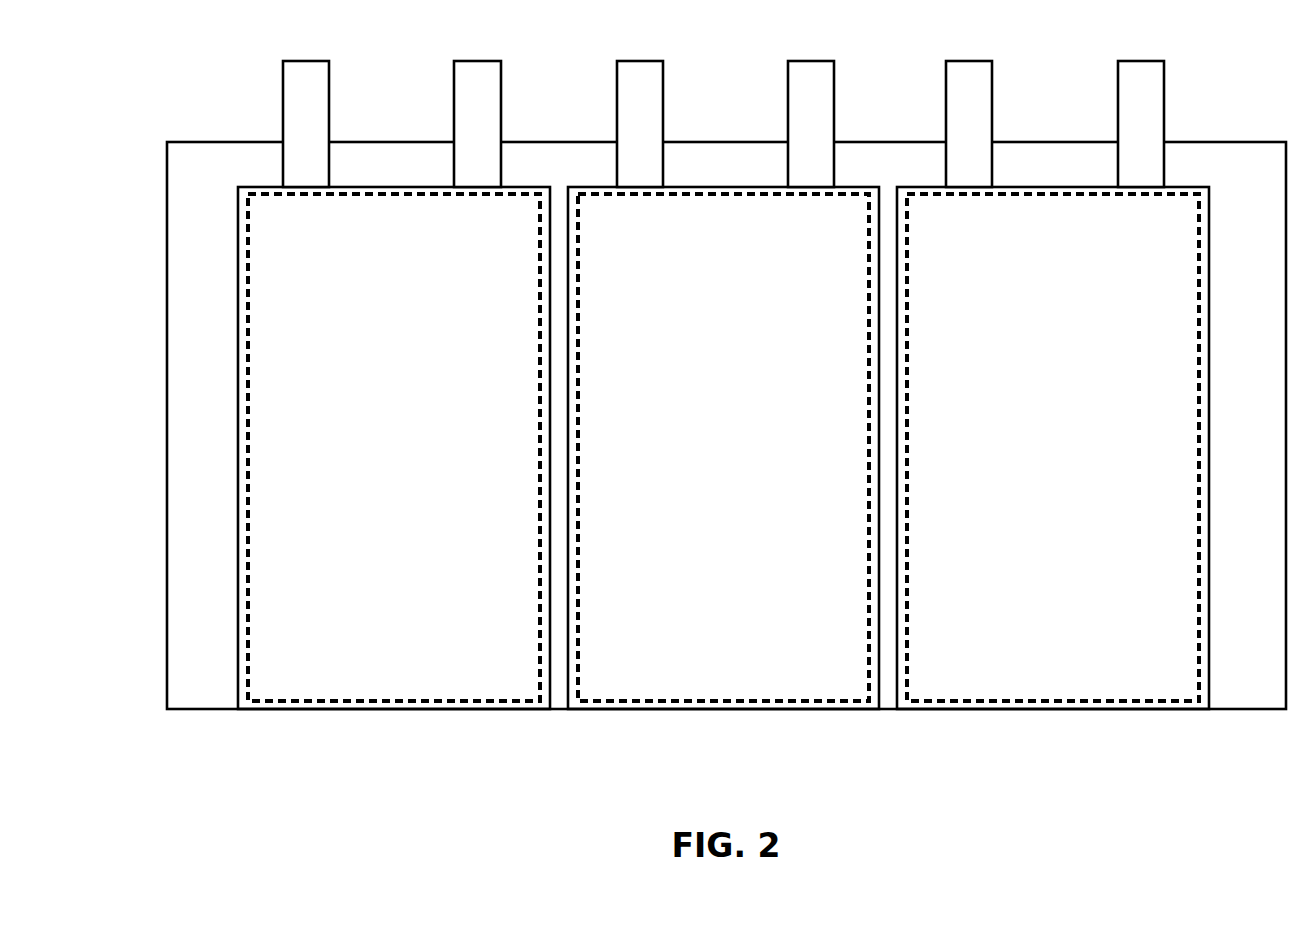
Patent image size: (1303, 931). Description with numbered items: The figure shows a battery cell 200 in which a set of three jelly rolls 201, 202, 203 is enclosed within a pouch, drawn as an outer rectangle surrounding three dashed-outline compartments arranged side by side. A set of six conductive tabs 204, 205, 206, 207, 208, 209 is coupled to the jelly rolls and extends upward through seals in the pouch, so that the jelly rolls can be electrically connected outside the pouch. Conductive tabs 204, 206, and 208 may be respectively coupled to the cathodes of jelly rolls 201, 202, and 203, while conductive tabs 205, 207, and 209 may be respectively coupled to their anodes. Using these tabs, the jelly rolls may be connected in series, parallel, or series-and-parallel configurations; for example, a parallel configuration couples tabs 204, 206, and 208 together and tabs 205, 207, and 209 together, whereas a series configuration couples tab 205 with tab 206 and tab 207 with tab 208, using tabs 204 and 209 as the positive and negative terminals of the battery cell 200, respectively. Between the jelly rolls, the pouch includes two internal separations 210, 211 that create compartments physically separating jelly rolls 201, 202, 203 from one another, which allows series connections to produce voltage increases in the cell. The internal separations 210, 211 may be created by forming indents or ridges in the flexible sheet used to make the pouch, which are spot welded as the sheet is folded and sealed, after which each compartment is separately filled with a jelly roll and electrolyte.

The battery cell 200 is at (212, 142).
The jelly roll 201 is at (394, 448).
The jelly roll 202 is at (723, 448).
The jelly roll 203 is at (1053, 448).
The conductive tab 204 is at (306, 61).
The conductive tab 205 is at (479, 61).
The conductive tab 206 is at (642, 61).
The conductive tab 207 is at (808, 61).
The conductive tab 208 is at (971, 61).
The conductive tab 209 is at (1142, 61).
The internal separation 210 is at (560, 687).
The internal separation 211 is at (889, 689).